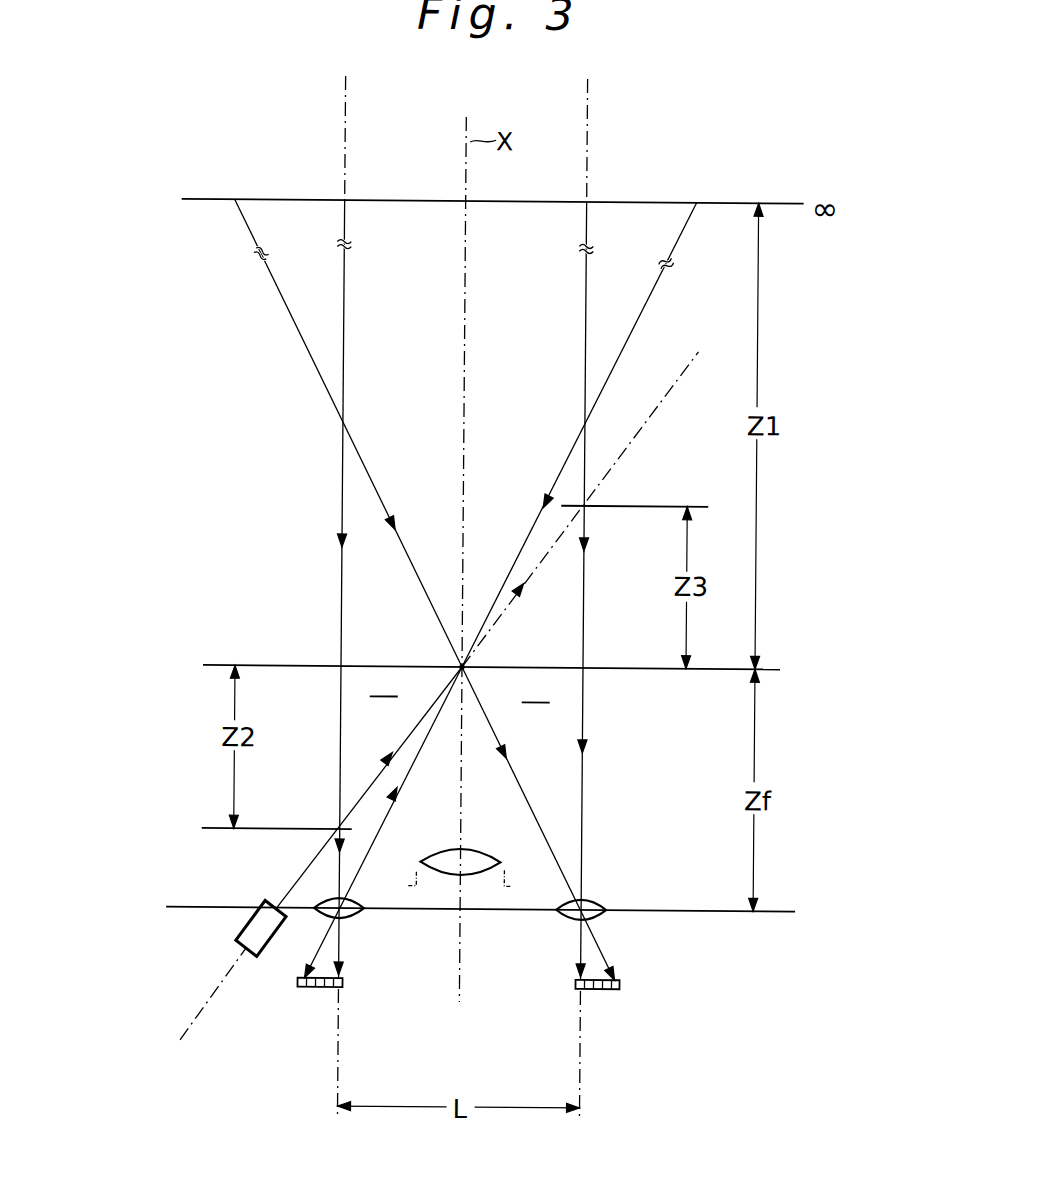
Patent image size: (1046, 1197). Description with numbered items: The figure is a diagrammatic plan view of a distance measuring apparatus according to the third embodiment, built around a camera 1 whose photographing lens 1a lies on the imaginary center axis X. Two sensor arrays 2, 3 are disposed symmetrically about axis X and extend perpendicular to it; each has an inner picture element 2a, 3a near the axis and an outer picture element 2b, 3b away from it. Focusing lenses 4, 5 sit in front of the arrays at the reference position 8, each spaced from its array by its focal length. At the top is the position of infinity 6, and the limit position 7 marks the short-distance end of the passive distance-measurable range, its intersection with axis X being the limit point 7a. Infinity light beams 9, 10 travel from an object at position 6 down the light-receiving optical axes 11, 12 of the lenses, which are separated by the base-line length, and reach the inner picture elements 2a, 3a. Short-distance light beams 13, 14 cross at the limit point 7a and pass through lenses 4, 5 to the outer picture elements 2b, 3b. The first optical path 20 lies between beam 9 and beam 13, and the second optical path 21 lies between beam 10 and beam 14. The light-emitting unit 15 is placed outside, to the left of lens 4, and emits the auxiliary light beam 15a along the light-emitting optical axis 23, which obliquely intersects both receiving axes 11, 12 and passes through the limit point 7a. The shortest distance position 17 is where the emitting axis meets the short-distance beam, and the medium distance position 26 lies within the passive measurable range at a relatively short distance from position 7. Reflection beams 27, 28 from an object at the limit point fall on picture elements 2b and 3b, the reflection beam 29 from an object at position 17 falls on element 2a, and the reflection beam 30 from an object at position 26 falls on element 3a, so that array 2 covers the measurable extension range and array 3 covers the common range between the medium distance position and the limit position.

The camera 1 is at (462, 992).
The photographing lens 1a is at (476, 858).
The sensor array 2 is at (296, 982).
The picture element 2a is at (344, 984).
The picture element 2b is at (302, 990).
The sensor array 3 is at (626, 985).
The picture element 3a is at (580, 990).
The picture element 3b is at (622, 990).
The focusing lens 4 is at (352, 904).
The focusing lens 5 is at (595, 903).
The position of infinity 6 is at (733, 201).
The limit position 7 is at (780, 667).
The limit point 7a is at (466, 664).
The reference position 8 is at (778, 909).
The infinity light beam 9 is at (343, 308).
The infinity light beam 10 is at (581, 310).
The light-receiving optical axis 11 is at (343, 140).
The light-receiving optical axis 12 is at (585, 140).
The short-distance light beam 13 is at (646, 300).
The short-distance light beam 14 is at (280, 302).
The light-emitting unit 15 is at (236, 938).
The auxiliary light beam 15a is at (304, 877).
The shortest distance position 17 is at (205, 829).
The first optical path 20 is at (386, 681).
The second optical path 21 is at (538, 687).
The light-emitting optical axis 23 is at (662, 398).
The medium distance position 26 is at (652, 505).
The reflection beam 27 is at (400, 784).
The reflection beam 28 is at (527, 802).
The reflection beam 29 is at (344, 868).
The reflection beam 30 is at (585, 712).